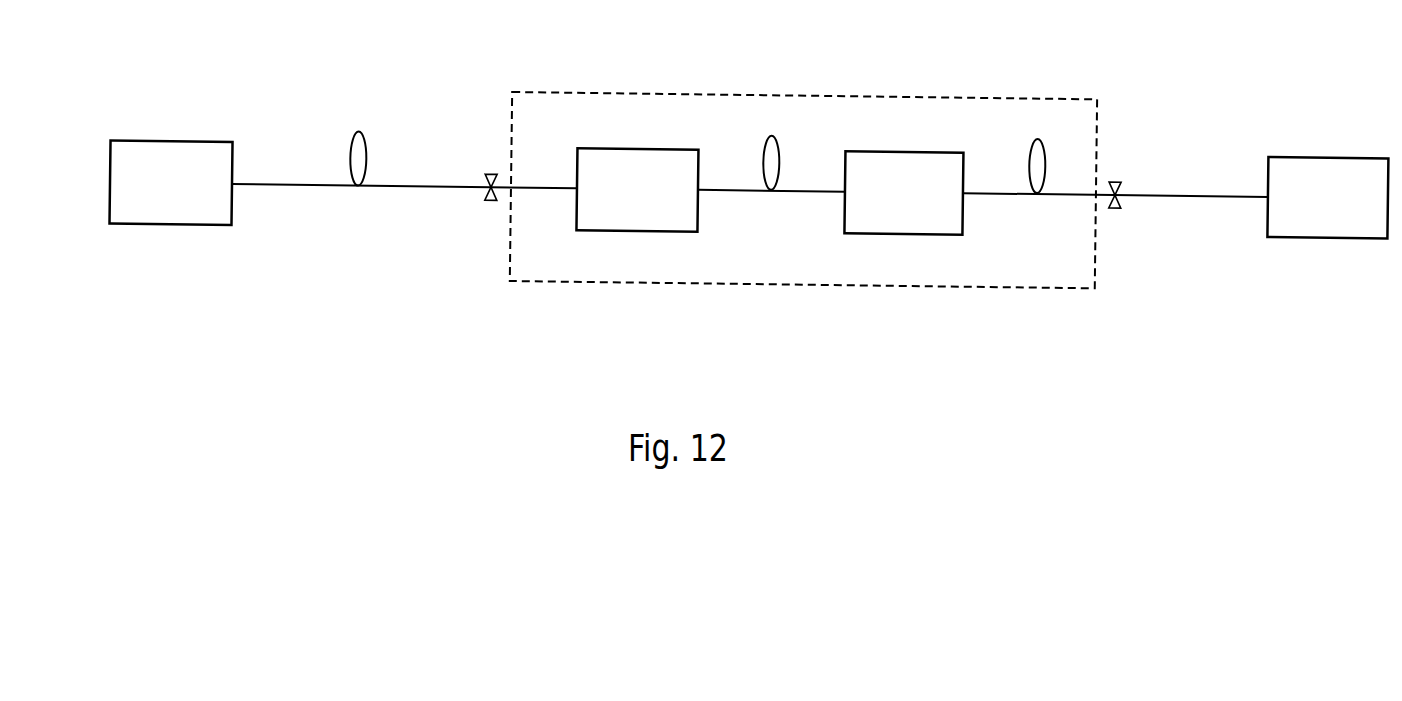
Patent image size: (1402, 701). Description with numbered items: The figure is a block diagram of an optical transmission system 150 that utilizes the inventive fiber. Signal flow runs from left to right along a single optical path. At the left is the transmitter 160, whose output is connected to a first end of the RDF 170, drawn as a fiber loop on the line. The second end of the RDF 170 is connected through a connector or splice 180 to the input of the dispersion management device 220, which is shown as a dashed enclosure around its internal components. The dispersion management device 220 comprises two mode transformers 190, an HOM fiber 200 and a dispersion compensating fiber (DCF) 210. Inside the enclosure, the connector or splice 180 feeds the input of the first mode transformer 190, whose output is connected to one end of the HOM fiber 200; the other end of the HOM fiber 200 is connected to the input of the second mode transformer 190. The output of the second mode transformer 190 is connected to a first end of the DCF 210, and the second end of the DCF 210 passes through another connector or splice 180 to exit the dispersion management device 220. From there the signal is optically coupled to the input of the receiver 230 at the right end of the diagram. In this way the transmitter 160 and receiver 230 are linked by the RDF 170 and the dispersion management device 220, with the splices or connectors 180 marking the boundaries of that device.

The transmission system 150 is at (1243, 108).
The transmitter 160 is at (200, 224).
The RDF 170 is at (352, 128).
The splices or connectors 180 is at (485, 186).
The mode transformers 190 is at (653, 226).
The HOM fiber 200 is at (782, 184).
The dispersion compensating fiber (DCF) 210 is at (1045, 184).
The dispersion management device 220 is at (933, 277).
The receiver 230 is at (1310, 224).